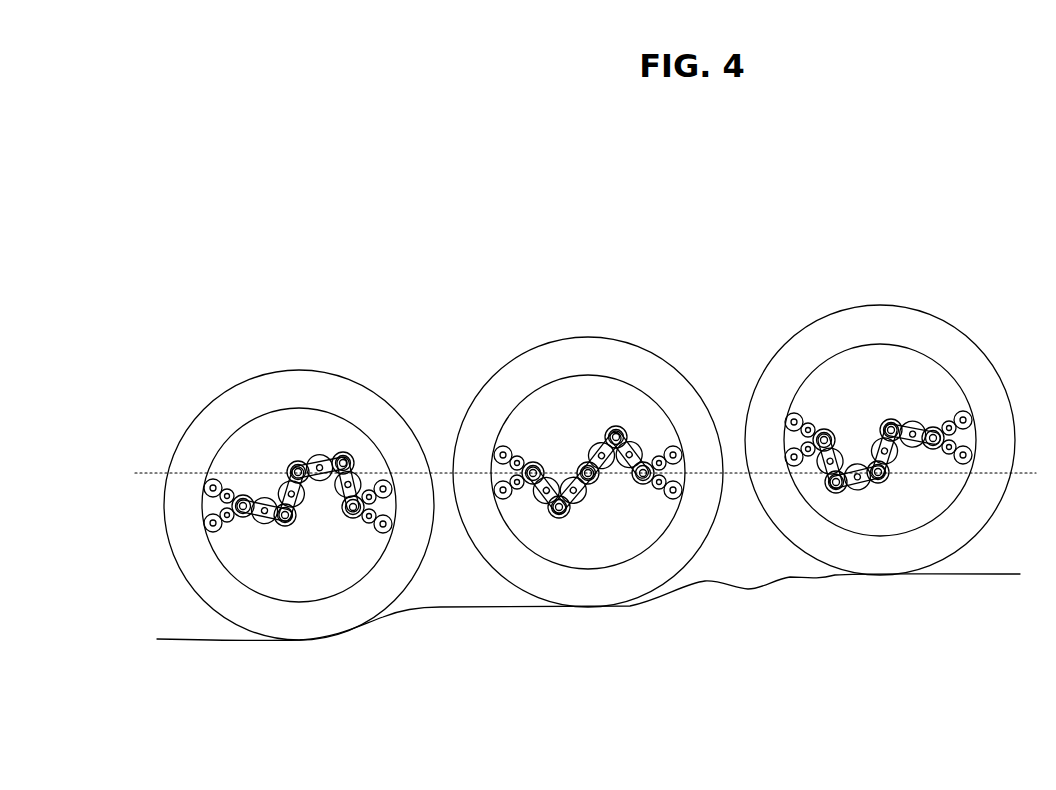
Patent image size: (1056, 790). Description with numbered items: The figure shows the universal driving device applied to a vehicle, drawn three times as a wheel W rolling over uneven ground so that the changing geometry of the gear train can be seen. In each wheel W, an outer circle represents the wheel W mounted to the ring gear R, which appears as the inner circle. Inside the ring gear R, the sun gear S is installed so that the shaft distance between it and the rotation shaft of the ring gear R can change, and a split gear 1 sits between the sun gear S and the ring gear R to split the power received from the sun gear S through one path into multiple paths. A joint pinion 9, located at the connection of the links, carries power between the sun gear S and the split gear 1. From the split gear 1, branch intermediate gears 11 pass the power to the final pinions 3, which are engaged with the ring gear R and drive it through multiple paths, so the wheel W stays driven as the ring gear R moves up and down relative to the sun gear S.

The split gear 1 is at (246, 495).
The final pinions 3 is at (210, 480).
The joint pinion 9 is at (291, 526).
The branch intermediate gears 11 is at (368, 523).
The sun gear S is at (297, 482).
The wheel W is at (322, 370).
The ring gear R is at (350, 415).